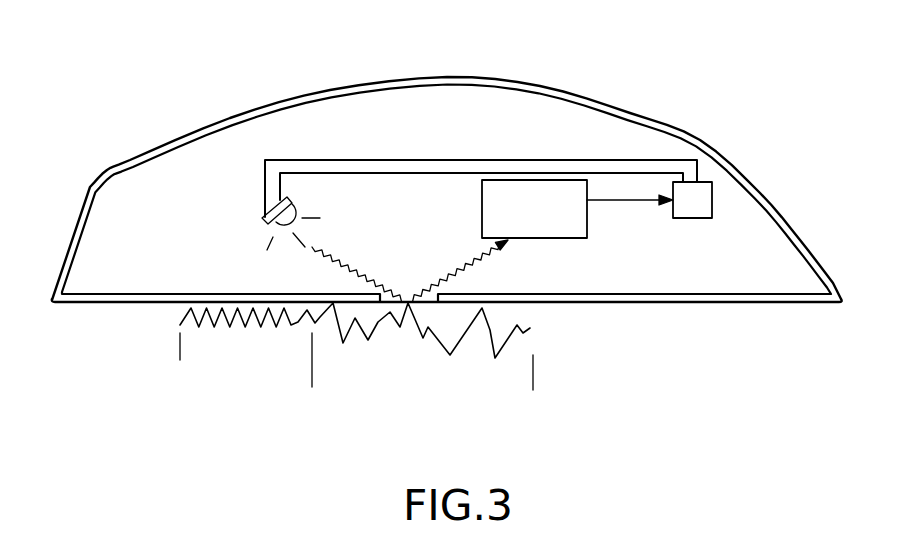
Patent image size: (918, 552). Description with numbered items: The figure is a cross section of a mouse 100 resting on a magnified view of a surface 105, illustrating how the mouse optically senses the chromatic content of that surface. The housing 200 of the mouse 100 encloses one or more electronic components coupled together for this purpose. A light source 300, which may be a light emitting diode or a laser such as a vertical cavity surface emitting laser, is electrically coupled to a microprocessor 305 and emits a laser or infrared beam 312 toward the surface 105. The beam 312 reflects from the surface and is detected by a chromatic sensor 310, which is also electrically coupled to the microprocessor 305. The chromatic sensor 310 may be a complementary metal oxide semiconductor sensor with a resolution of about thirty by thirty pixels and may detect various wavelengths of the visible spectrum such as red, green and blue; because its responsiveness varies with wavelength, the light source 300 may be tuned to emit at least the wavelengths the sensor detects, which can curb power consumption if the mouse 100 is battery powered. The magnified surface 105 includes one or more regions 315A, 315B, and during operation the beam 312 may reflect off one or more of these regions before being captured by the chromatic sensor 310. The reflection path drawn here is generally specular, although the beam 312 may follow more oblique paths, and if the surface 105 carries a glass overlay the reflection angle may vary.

The mouse 100 is at (447, 158).
The surface 105 is at (570, 378).
The housing 200 is at (458, 77).
The light source 300 is at (271, 227).
The microprocessor 305 is at (700, 218).
The chromatic sensor 310 is at (565, 238).
The beam 312 is at (352, 268).
The first region 315A is at (311, 352).
The second region 315B is at (532, 372).